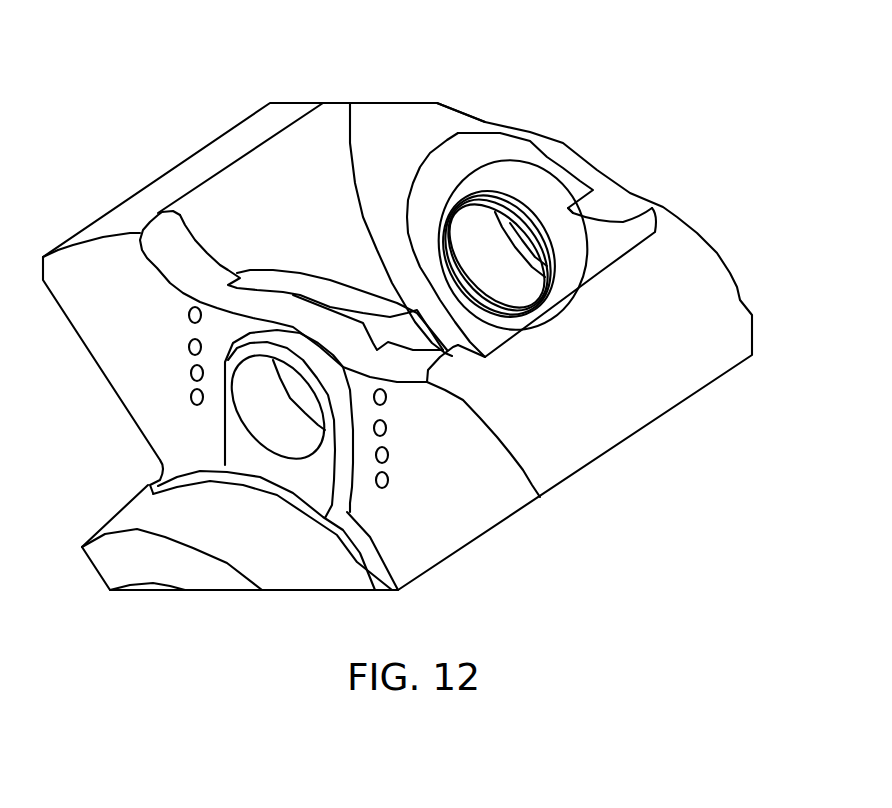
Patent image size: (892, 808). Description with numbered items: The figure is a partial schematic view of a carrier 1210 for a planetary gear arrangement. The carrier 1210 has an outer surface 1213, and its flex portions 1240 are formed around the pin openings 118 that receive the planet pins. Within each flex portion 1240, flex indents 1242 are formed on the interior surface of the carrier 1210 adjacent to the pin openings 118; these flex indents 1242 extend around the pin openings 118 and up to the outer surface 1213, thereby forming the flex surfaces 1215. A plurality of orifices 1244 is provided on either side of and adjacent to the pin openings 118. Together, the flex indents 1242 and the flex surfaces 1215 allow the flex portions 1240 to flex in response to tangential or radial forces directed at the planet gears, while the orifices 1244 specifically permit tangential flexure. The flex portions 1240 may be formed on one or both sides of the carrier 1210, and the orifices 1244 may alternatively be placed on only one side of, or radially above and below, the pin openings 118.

The carrier 1210 is at (612, 472).
The outer surface 1213 is at (436, 125).
The flex surfaces 1215 is at (556, 153).
The flex portions 1240 is at (278, 245).
The flex indents 1242 is at (415, 189).
The orifices 1244 is at (205, 397).
The pin openings 118 is at (252, 487).